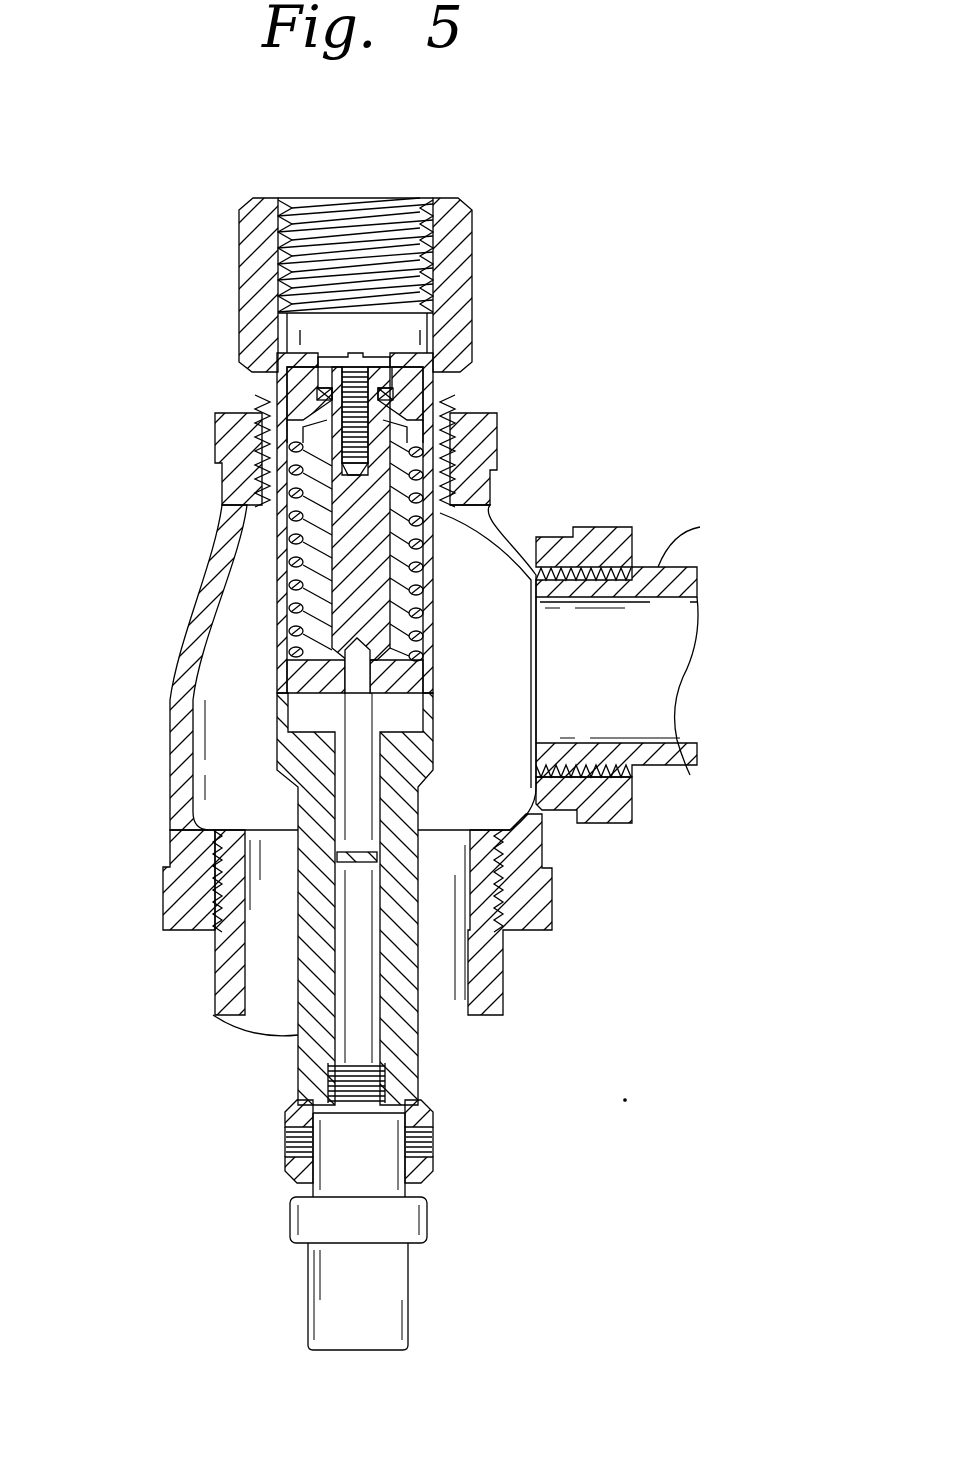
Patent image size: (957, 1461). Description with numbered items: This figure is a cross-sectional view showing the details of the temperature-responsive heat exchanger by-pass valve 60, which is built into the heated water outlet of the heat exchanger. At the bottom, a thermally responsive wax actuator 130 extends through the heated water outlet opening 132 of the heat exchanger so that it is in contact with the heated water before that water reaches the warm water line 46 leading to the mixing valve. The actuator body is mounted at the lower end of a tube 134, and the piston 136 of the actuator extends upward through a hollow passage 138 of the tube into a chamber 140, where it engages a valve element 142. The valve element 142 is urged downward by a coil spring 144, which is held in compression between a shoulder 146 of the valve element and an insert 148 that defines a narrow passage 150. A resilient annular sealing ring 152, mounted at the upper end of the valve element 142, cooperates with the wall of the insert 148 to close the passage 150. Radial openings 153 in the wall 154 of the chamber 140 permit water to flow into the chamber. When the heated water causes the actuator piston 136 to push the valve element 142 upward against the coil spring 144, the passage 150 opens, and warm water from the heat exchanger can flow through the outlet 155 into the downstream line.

The heat exchanger by-pass valve 60 is at (212, 250).
The outlet 155 is at (398, 198).
The narrow passage 150 is at (412, 355).
The insert 148 is at (430, 388).
The resilient annular sealing ring 152 is at (262, 398).
The coil spring 144 is at (440, 456).
The valve element 142 is at (300, 487).
The warm water line 46 is at (640, 563).
The wall of chamber 154 is at (437, 585).
The shoulder 146 is at (430, 690).
The radial openings 153 is at (293, 622).
The chamber 140 is at (400, 717).
The hollow passage 138 is at (342, 957).
The heated water outlet opening 132 is at (440, 920).
The piston 136 is at (355, 1033).
The tube 134 is at (305, 1060).
The thermally responsive wax actuator 130 is at (385, 1267).